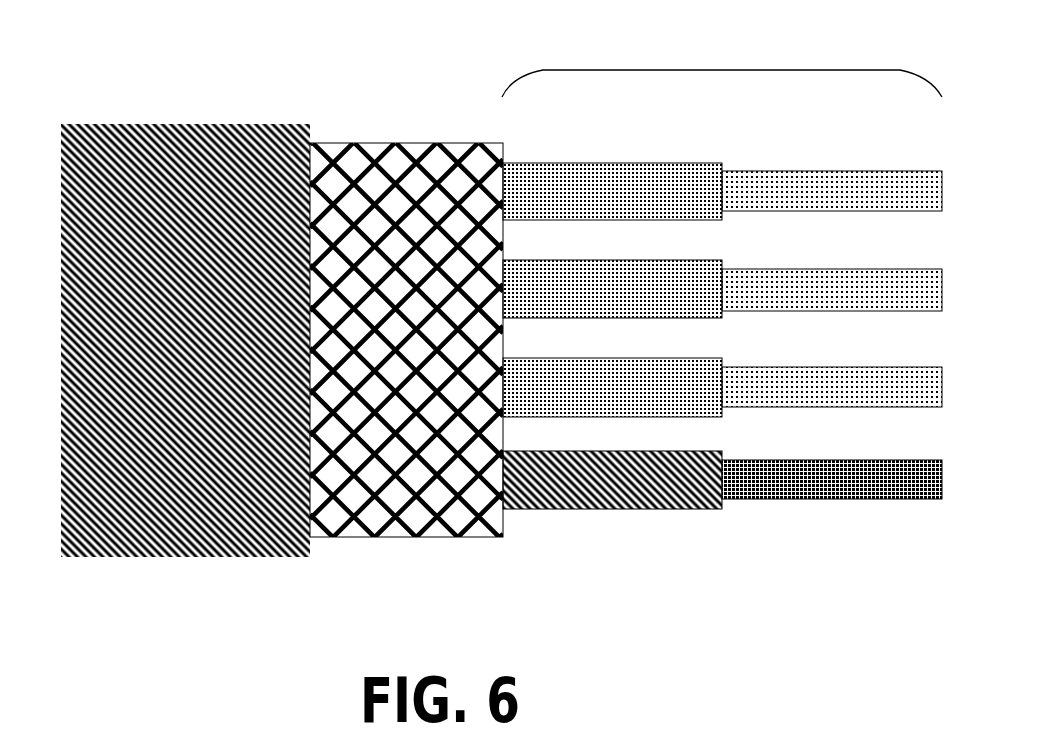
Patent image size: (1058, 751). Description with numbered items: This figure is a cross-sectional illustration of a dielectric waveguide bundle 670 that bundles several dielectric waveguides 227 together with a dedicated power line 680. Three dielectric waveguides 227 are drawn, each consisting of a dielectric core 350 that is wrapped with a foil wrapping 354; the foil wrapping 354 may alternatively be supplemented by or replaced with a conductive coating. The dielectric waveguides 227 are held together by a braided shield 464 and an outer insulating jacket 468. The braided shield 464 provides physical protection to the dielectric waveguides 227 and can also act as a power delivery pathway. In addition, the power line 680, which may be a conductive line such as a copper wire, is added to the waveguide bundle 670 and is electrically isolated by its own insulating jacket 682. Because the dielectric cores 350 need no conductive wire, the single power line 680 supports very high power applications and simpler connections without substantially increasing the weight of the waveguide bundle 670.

The waveguide bundle 670 is at (173, 90).
The insulating jacket 468 is at (147, 557).
The braided shield 464 is at (380, 540).
The dielectric waveguides 227 is at (722, 69).
The foil wrapping 354 is at (652, 178).
The dielectric core 350 is at (812, 183).
The insulating jacket 682 is at (627, 510).
The power line 680 is at (825, 500).